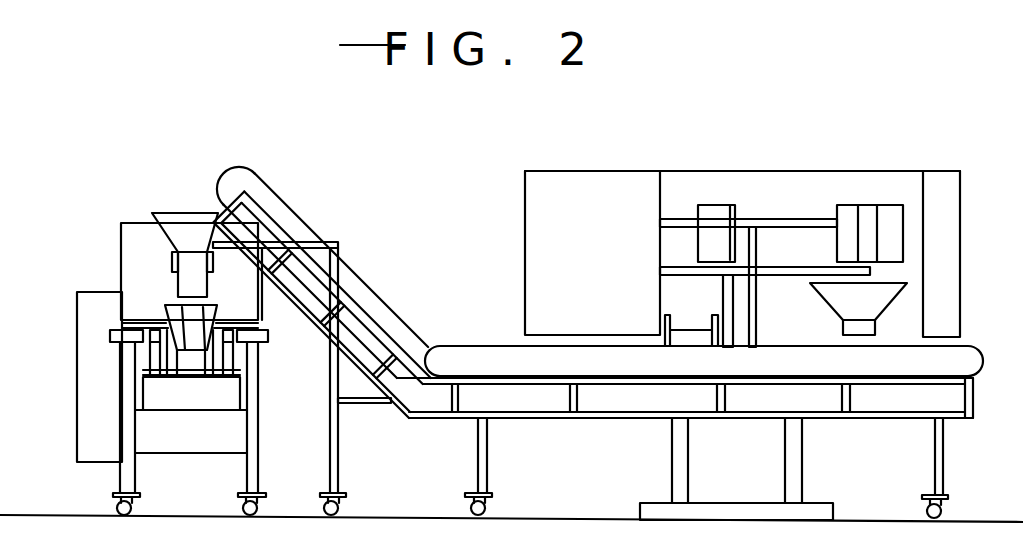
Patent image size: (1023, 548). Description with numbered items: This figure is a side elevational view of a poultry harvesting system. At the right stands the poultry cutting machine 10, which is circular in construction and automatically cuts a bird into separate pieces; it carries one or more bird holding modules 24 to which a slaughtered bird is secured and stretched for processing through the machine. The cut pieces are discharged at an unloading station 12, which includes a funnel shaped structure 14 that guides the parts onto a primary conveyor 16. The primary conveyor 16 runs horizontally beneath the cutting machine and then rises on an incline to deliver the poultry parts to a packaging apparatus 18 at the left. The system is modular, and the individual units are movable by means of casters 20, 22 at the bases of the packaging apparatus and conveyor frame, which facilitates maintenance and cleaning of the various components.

The poultry cutting machine 10 is at (976, 150).
The unloading station 12 is at (857, 194).
The funnel shaped structure 14 is at (883, 297).
The primary conveyor 16 is at (390, 284).
The packaging apparatus 18 is at (130, 180).
The casters 20 is at (243, 507).
The casters 22 is at (465, 500).
The bird holding module 24 is at (713, 205).